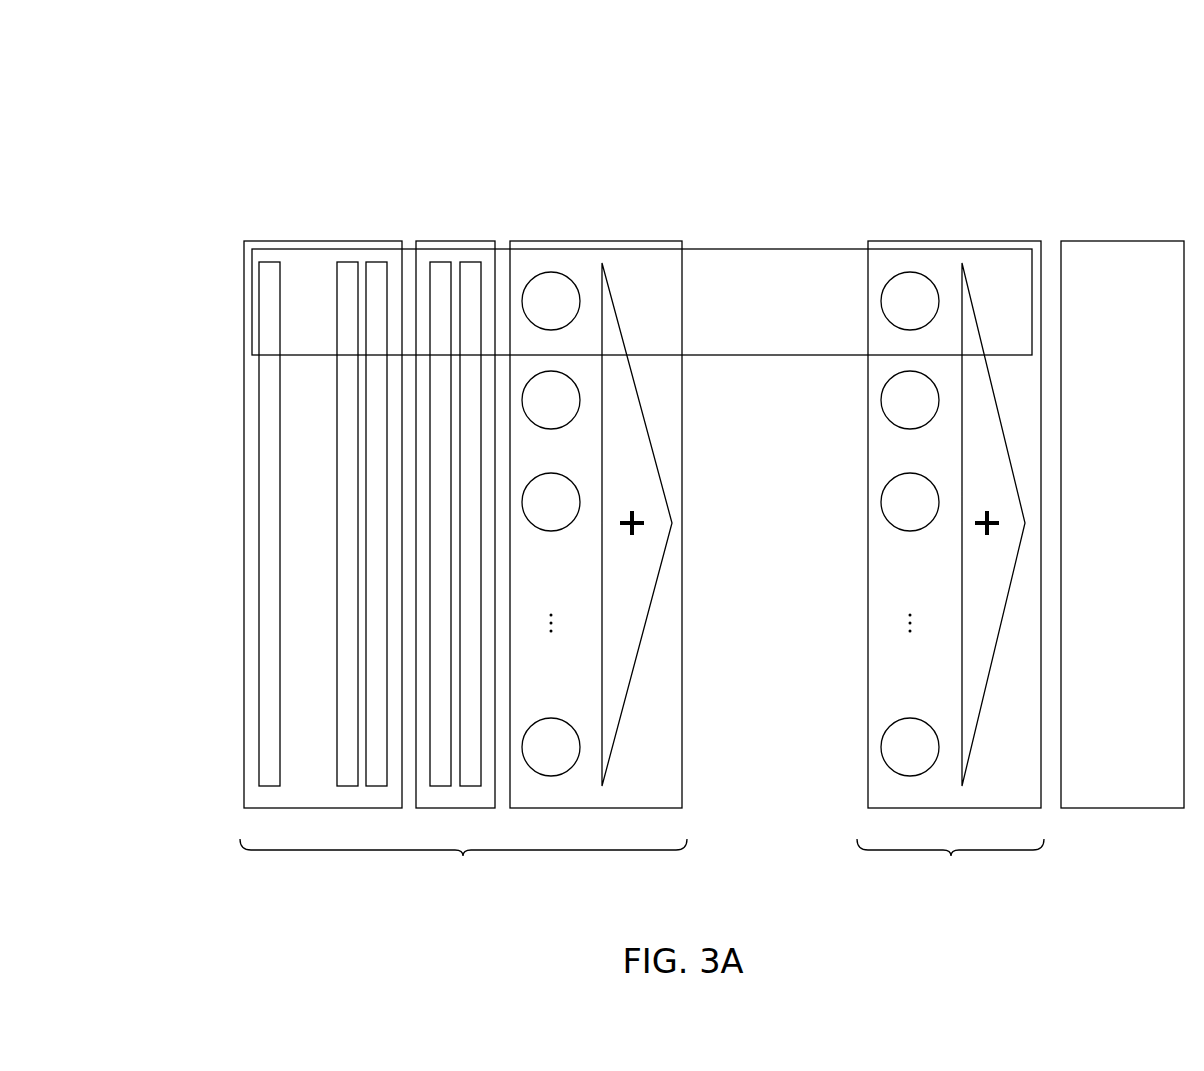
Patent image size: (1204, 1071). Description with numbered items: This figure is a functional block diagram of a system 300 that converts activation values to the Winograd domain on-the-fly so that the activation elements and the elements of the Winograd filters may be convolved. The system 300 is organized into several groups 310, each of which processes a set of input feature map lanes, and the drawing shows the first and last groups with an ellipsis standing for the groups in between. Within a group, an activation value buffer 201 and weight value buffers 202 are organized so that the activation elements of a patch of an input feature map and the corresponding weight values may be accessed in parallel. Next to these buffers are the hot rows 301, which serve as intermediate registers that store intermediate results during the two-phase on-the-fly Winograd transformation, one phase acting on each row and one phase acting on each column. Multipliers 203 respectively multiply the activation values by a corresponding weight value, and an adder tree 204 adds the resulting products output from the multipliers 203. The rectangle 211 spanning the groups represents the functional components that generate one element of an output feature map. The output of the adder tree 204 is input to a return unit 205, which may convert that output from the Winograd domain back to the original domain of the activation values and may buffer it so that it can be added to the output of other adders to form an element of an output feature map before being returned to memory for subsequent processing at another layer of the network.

The system 300 is at (265, 114).
The activation value buffer 201 is at (271, 266).
The weight value buffer 202 is at (346, 266).
The hot rows 301 is at (455, 240).
The multipliers 203 is at (551, 281).
The adder tree 204 is at (606, 285).
The rectangle 211 is at (778, 248).
The return unit 205 is at (1119, 255).
The groups 310 is at (642, 567).